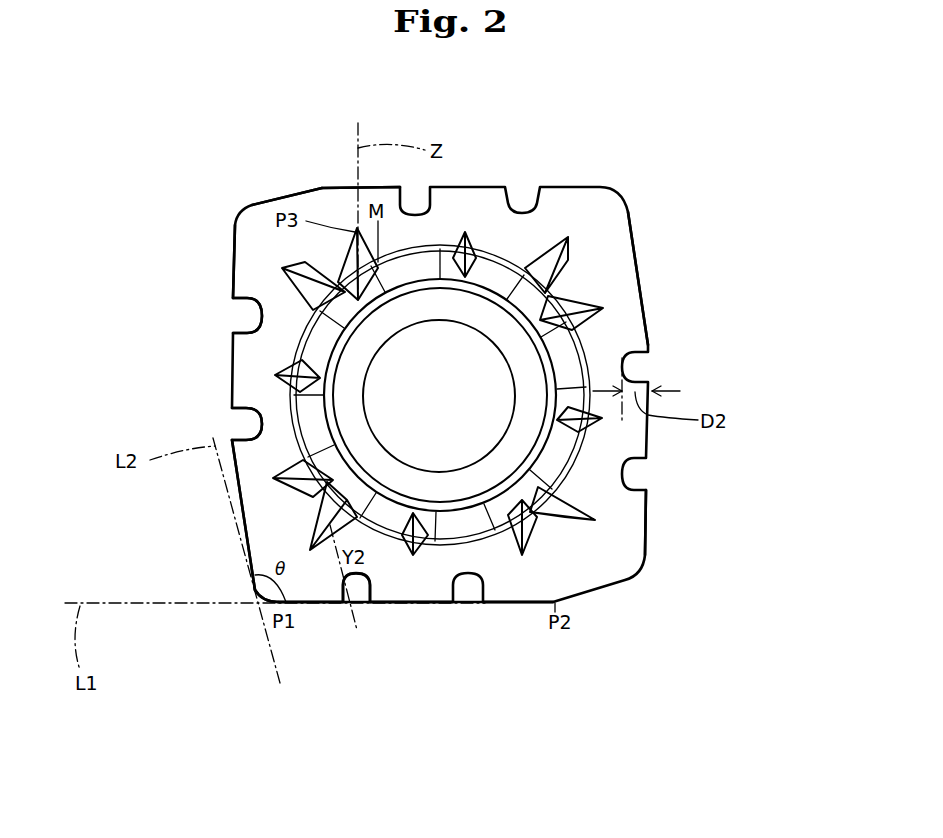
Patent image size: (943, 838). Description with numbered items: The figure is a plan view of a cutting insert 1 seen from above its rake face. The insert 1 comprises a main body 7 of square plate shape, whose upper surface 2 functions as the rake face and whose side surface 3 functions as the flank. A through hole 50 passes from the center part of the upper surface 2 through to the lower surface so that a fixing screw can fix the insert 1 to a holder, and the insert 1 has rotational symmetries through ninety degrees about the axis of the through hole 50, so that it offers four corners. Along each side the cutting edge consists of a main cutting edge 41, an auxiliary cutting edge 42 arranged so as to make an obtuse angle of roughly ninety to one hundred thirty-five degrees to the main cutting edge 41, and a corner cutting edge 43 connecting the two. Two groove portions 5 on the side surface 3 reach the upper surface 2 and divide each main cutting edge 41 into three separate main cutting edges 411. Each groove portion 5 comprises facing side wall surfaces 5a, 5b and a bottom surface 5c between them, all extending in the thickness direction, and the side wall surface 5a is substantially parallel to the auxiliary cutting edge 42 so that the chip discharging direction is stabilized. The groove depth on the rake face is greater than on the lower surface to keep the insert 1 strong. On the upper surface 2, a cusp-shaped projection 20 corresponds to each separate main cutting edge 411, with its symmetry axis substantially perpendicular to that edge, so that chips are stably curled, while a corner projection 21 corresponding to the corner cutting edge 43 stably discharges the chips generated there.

The insert 1 is at (622, 170).
The upper surface 2 is at (617, 238).
The side surface 3 is at (265, 200).
The groove portion 5 is at (233, 314).
The side wall surface 5a is at (350, 602).
The side wall surface 5b is at (372, 603).
The bottom surface 5c is at (363, 583).
The main body 7 is at (258, 233).
The projection 20 is at (337, 275).
The corner projection 21 is at (600, 500).
The main cutting edge 41 is at (538, 740).
The auxiliary cutting edge 42 is at (238, 550).
The corner cutting edge 43 is at (253, 603).
The through hole 50 is at (443, 380).
The separate main cutting edge 411 is at (345, 185).